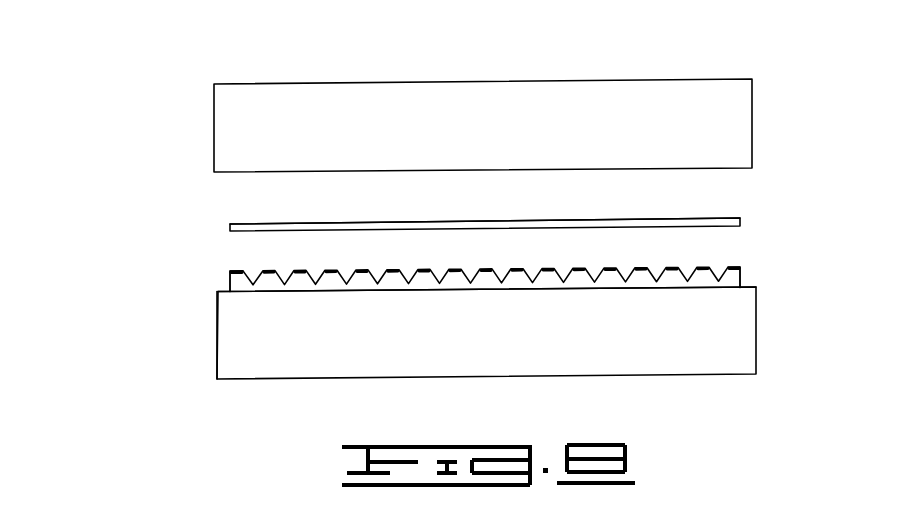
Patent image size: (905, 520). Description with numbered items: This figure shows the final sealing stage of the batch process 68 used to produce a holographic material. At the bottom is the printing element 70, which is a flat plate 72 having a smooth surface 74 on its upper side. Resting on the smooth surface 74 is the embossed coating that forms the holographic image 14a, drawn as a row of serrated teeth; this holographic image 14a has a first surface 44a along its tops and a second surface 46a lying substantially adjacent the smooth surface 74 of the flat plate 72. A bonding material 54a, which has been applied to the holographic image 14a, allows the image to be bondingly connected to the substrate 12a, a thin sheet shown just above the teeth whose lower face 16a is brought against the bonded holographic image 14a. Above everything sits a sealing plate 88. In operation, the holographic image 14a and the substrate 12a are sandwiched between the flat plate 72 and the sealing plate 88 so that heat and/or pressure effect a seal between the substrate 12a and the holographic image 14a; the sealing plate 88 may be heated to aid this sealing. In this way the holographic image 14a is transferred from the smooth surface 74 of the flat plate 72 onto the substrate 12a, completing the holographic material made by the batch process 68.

The batch process 68 is at (181, 68).
The sealing plate 88 is at (752, 109).
The substrate 12a is at (741, 225).
The top surface of plate 16a is at (252, 233).
The bonding material 54a is at (734, 266).
The holographic image 14a is at (741, 273).
The first surface 44a is at (264, 270).
The smooth surface 74 is at (229, 289).
The second surface 46a is at (266, 293).
The flat plate 72 is at (756, 326).
The printing element 70 is at (211, 345).